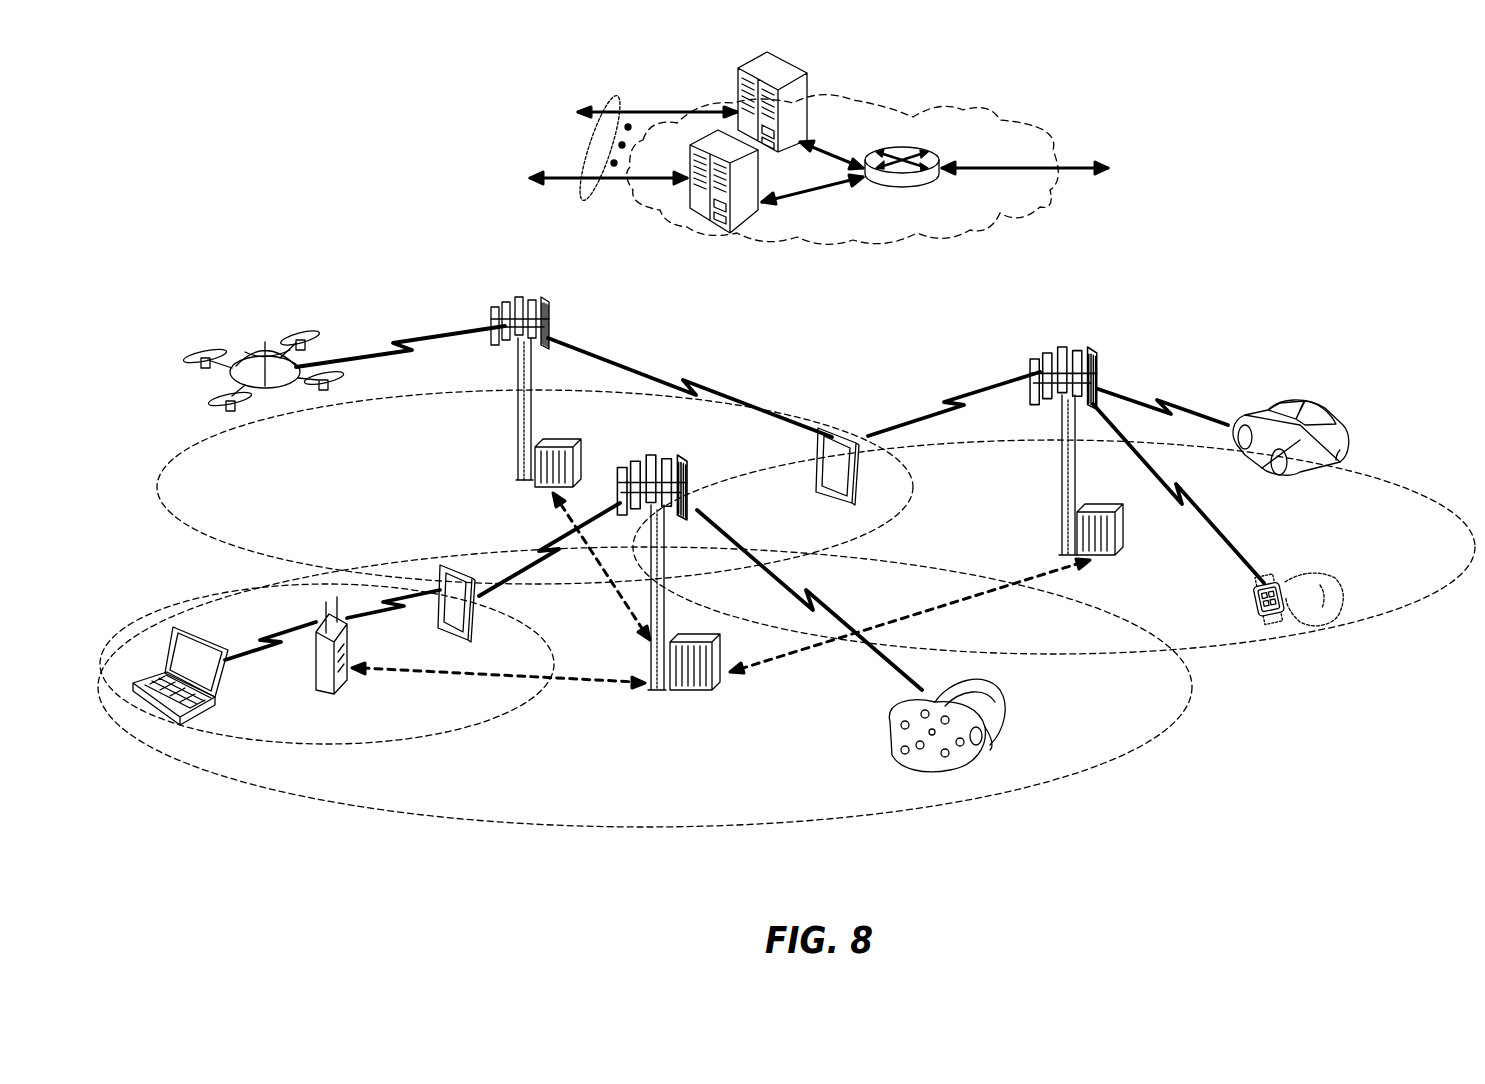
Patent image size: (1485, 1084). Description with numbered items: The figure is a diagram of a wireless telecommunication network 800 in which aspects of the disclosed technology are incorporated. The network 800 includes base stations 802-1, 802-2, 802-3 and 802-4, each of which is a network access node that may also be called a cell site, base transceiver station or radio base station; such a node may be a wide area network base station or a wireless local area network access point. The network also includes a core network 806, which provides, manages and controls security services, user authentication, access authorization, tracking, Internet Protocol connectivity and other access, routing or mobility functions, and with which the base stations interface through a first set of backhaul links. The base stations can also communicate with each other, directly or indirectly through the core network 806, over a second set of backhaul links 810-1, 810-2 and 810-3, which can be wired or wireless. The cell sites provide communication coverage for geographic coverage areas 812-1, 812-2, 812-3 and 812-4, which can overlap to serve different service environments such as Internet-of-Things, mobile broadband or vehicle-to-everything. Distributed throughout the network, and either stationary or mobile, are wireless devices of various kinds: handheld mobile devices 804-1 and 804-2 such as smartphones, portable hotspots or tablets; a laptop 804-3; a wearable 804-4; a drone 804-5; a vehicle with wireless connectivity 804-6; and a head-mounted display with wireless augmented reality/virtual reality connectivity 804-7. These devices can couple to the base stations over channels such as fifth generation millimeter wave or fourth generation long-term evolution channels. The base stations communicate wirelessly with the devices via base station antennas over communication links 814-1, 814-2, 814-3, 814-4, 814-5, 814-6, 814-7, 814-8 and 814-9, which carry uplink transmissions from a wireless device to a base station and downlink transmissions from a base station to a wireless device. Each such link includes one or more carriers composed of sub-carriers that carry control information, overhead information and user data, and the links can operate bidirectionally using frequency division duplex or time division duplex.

The wireless telecommunication network 800 is at (1364, 156).
The core network 806 is at (938, 242).
The base station 802-1 is at (655, 695).
The base station 802-2 is at (515, 437).
The base station 802-3 is at (1052, 478).
The base station 802-4 is at (316, 680).
The handheld mobile device 804-1 is at (520, 610).
The handheld mobile device 804-2 is at (820, 468).
The laptop 804-3 is at (158, 712).
The wearable 804-4 is at (1270, 580).
The drone 804-5 is at (275, 400).
The vehicle with wireless connectivity 804-6 is at (1310, 420).
The head-mounted display 804-7 is at (1000, 715).
The backhaul link 810-1 is at (400, 678).
The backhaul link 810-2 is at (980, 590).
The backhaul link 810-3 is at (620, 612).
The geographic coverage area 812-1 is at (585, 825).
The geographic coverage area 812-2 is at (455, 732).
The geographic coverage area 812-3 is at (215, 548).
The geographic coverage area 812-4 is at (1375, 468).
The communication link 814-1 is at (818, 602).
The communication link 814-2 is at (525, 554).
The communication link 814-3 is at (240, 653).
The communication link 814-4 is at (405, 622).
The communication link 814-5 is at (400, 345).
The communication link 814-6 is at (700, 387).
The communication link 814-7 is at (950, 403).
The communication link 814-8 is at (1188, 497).
The communication link 814-9 is at (1160, 402).